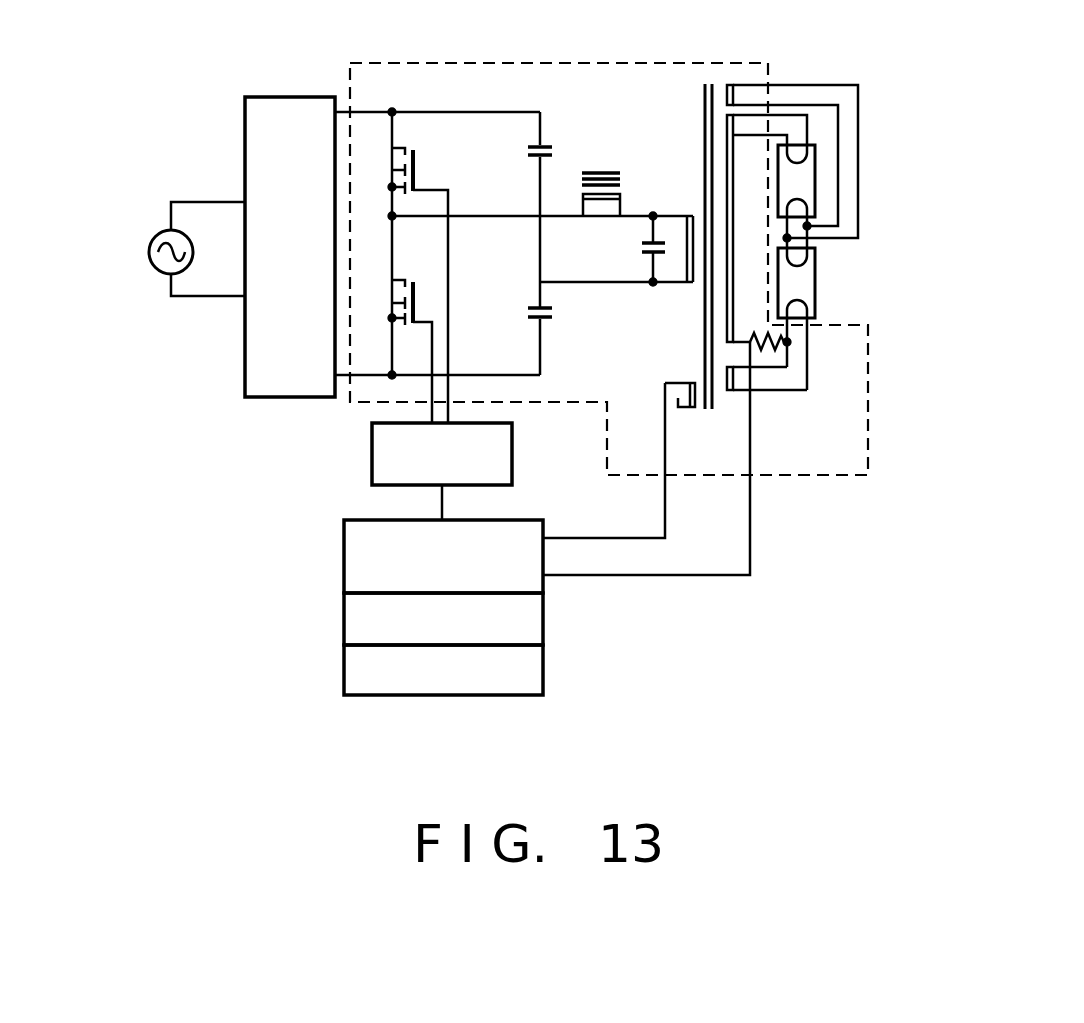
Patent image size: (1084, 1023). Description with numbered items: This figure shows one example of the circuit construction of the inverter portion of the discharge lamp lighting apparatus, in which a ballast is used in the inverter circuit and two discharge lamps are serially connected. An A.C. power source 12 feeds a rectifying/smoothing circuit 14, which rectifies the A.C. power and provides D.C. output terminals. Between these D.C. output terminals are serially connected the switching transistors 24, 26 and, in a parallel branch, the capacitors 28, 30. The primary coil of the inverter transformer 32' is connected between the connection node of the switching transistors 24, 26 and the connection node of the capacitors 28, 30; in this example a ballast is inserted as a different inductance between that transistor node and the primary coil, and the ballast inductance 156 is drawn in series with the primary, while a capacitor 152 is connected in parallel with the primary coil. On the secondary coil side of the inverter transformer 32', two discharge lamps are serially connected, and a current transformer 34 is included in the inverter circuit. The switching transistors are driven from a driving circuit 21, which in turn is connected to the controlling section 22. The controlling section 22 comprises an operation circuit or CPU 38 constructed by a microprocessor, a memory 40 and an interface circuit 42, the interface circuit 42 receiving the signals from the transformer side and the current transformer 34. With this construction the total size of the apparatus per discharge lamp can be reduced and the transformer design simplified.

The A.C. power source 12 is at (150, 253).
The rectifying/smoothing circuit 14 is at (248, 362).
The driving circuit 21 is at (372, 455).
The controlling section 22 is at (438, 608).
The switching transistor 24 is at (424, 170).
The switching transistor 26 is at (406, 280).
The capacitor 28 is at (528, 153).
The capacitor 30 is at (528, 313).
The inverter transformer 32' is at (756, 271).
The current transformer (CT) 34 is at (767, 352).
The operation circuit (CPU) 38 is at (543, 672).
The memory 40 is at (543, 622).
The interface circuit 42 is at (344, 557).
The capacitor 152 is at (642, 258).
The inductor 156 is at (606, 172).